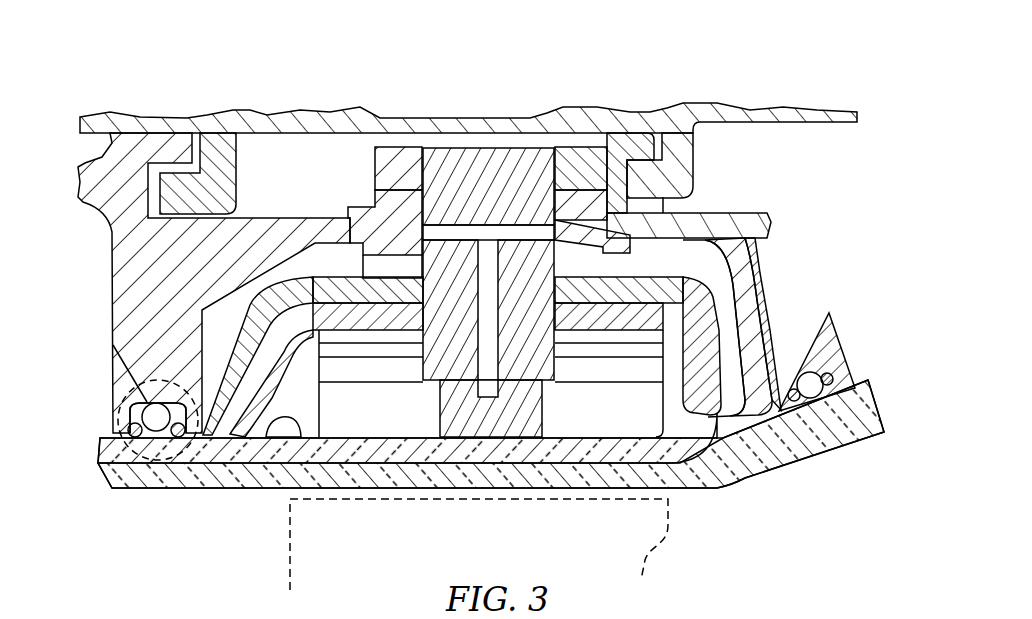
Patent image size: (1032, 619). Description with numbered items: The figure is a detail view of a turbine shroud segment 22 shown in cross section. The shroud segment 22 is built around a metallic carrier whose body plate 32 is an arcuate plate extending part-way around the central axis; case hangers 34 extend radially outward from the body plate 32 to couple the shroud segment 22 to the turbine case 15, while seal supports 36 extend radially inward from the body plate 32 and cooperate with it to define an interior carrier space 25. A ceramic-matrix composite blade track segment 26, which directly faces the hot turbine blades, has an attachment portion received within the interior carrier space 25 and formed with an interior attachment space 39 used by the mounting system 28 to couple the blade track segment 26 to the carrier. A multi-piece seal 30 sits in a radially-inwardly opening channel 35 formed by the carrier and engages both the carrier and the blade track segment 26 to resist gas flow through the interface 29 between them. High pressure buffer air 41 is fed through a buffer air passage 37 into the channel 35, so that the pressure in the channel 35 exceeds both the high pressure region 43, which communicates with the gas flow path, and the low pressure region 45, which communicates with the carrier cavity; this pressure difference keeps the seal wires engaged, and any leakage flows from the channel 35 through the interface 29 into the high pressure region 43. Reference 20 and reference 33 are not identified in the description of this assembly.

The seal assembly 20 is at (474, 326).
The turbine shroud segment 22 is at (153, 105).
The turbine case 15 is at (468, 115).
The case hangers 34 is at (242, 163).
The body block 33 is at (70, 306).
The seal supports 36 is at (110, 283).
The buffer air passage 37 is at (113, 345).
The multi-piece seal 30 is at (128, 452).
The radially-inwardly opening channel 35 is at (190, 404).
The interface 29 is at (110, 437).
The high pressure region 43 is at (70, 498).
The body plate 32 is at (330, 205).
The mounting system 28 is at (474, 143).
The interior carrier space 25 is at (306, 262).
The interior attachment space 39 is at (682, 348).
The low pressure region 45 is at (241, 300).
The blade track segment 26 is at (737, 497).
The high pressure buffer air 41 is at (479, 559).